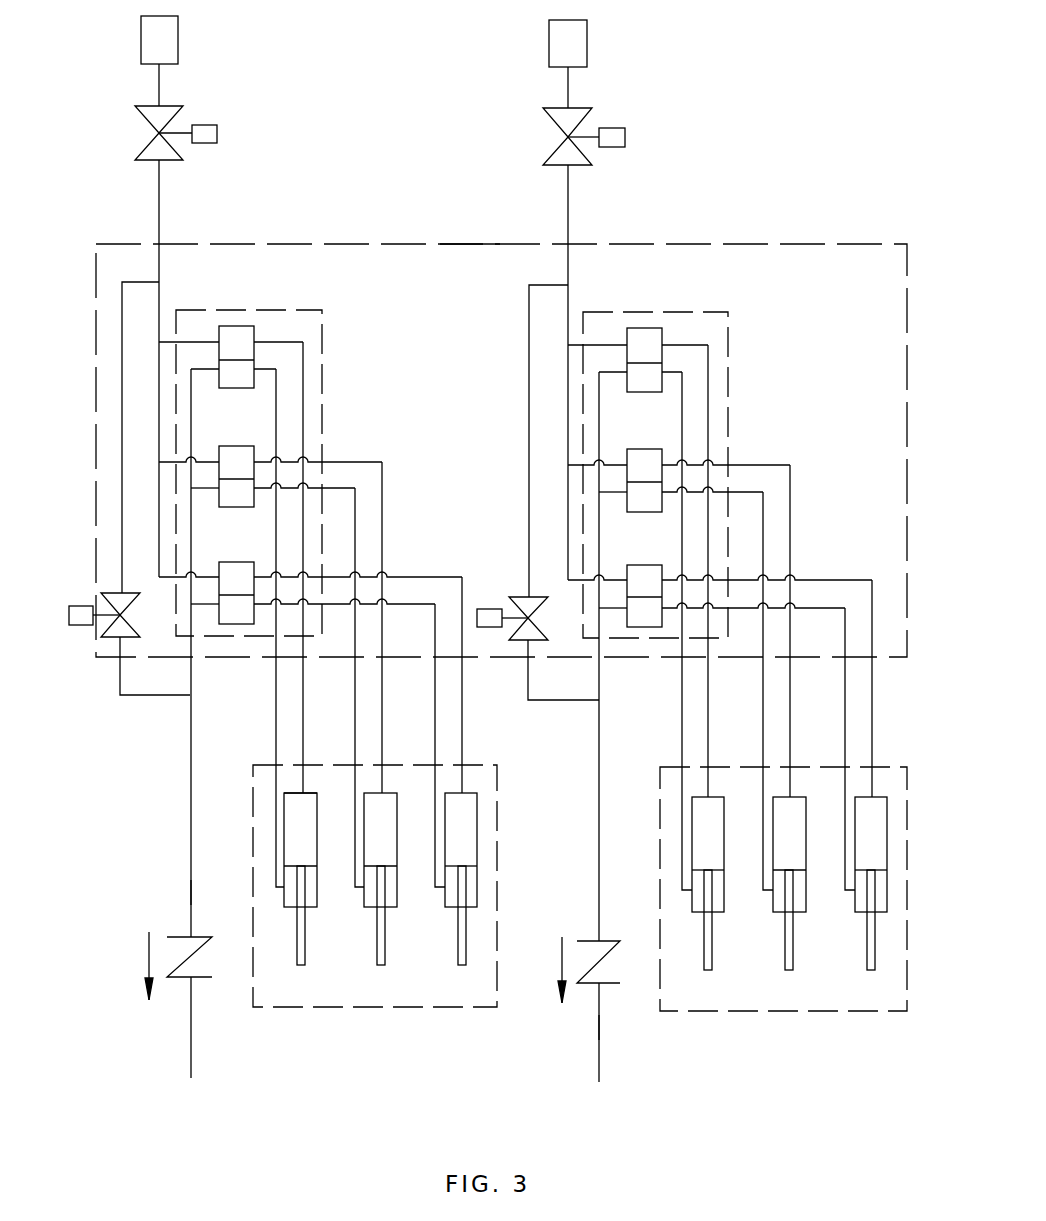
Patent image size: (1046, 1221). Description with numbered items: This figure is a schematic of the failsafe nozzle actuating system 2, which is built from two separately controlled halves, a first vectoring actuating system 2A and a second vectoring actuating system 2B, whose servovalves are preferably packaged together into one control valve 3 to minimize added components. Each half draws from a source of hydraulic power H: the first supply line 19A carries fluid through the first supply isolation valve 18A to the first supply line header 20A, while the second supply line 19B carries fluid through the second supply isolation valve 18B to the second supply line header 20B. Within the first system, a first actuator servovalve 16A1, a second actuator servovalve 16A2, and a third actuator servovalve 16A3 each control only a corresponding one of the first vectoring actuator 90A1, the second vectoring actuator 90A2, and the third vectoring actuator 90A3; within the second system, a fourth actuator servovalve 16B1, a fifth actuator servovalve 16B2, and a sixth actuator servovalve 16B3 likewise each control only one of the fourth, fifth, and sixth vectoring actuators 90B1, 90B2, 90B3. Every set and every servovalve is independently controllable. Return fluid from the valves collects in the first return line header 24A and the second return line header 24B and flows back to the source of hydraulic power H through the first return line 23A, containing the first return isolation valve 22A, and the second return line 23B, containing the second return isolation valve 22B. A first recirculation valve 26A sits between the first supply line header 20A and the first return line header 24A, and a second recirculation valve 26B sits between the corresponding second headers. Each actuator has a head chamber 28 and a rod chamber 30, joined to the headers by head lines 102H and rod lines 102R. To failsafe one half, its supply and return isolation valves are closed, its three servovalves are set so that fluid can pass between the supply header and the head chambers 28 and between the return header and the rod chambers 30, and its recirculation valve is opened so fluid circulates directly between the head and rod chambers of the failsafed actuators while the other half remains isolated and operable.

The source of hydraulic power H is at (178, 40).
The control valve 3 is at (346, 238).
The failsafe nozzle actuating system 2 is at (484, 226).
The first vectoring actuating system 2A is at (339, 304).
The second vectoring actuating system 2B is at (779, 309).
The first supply isolation valve 18A is at (178, 116).
The second supply isolation valve 18B is at (590, 119).
The first supply line 19A is at (160, 213).
The second supply line 19B is at (569, 215).
The first supply line header 20A is at (160, 290).
The second supply line header 20B is at (569, 292).
The first actuator servovalve 16A1 is at (247, 326).
The second actuator servovalve 16A2 is at (257, 413).
The third actuator servovalve 16A3 is at (257, 528).
The fourth actuator servovalve 16B1 is at (656, 328).
The fifth actuator servovalve 16B2 is at (663, 418).
The sixth actuator servovalve 16B3 is at (663, 533).
The first return line header 24A is at (192, 645).
The second return line header 24B is at (600, 645).
The first recirculation valve 26A is at (116, 640).
The second recirculation valve 26B is at (528, 597).
The rod lines 102R is at (355, 727).
The head lines 102H is at (303, 740).
The head chambers 28 is at (335, 783).
The rod chambers 30 is at (313, 893).
The first vectoring actuator 90A1 is at (317, 885).
The second vectoring actuator 90A2 is at (378, 896).
The third vectoring actuator 90A3 is at (458, 896).
The fourth vectoring actuator 90B1 is at (707, 900).
The fifth vectoring actuator 90B2 is at (787, 900).
The sixth vectoring actuator 90B3 is at (868, 900).
The first return isolation valve 22A is at (178, 935).
The second return isolation valve 22B is at (588, 938).
The first return line 23A is at (190, 893).
The second return line 23B is at (600, 1026).